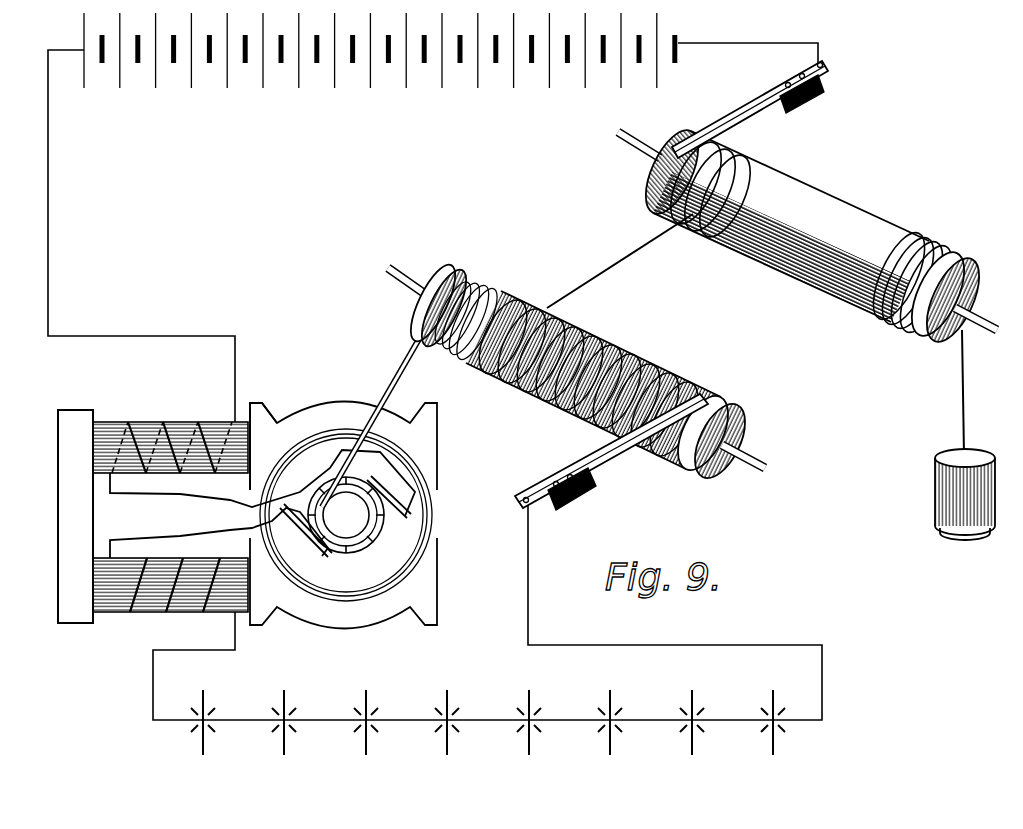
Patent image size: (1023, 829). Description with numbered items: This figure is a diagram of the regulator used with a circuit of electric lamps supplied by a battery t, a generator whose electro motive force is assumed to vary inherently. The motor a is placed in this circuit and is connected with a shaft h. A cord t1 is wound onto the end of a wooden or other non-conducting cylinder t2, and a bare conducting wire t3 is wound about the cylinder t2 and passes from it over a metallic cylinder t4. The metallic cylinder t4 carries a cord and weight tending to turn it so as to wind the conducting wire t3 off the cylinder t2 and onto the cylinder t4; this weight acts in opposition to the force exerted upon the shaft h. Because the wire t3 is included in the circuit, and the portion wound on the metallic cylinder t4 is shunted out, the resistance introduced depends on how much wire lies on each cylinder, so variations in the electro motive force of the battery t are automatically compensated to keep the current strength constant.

The battery t is at (379, 71).
The cord t1 is at (376, 413).
The non-conducting cylinder t2 is at (576, 367).
The bare conducting wire t3 is at (620, 261).
The metallic cylinder t4 is at (807, 300).
The motor a is at (262, 504).
The shaft h is at (346, 515).